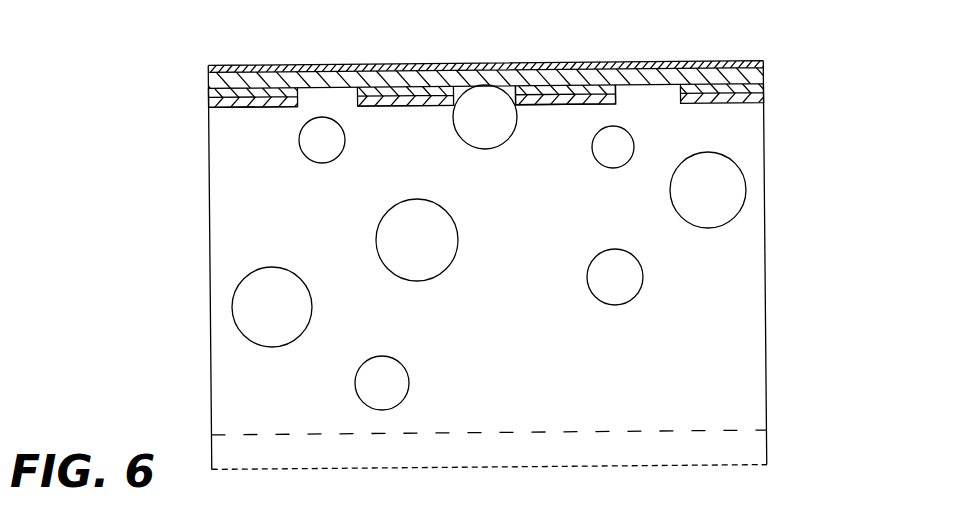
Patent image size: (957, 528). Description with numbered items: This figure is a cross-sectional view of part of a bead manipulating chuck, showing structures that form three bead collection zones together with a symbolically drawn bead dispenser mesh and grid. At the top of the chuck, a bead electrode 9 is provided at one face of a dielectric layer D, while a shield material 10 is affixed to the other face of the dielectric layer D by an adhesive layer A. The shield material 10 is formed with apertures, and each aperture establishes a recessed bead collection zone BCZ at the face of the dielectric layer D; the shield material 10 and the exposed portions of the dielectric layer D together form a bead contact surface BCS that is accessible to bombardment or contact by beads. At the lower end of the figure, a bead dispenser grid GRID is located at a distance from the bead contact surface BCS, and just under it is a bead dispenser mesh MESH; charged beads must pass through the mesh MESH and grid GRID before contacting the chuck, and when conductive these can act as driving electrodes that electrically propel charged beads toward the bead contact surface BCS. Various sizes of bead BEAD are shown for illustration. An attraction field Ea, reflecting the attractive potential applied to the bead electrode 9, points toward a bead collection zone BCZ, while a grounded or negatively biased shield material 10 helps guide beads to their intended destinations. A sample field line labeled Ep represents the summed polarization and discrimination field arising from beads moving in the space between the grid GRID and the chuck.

The bead electrode 9 is at (315, 62).
The dielectric layer D is at (213, 82).
The adhesive layer A is at (213, 97).
The shield material 10 is at (568, 102).
The bead contact surface BCS is at (292, 125).
The bead collection zone BCZ is at (339, 112).
The attraction field Ea is at (650, 168).
The bead BEAD is at (448, 252).
The polarization and discrimination field Ep is at (539, 336).
The bead dispenser grid GRID is at (625, 430).
The bead dispenser mesh MESH is at (625, 466).